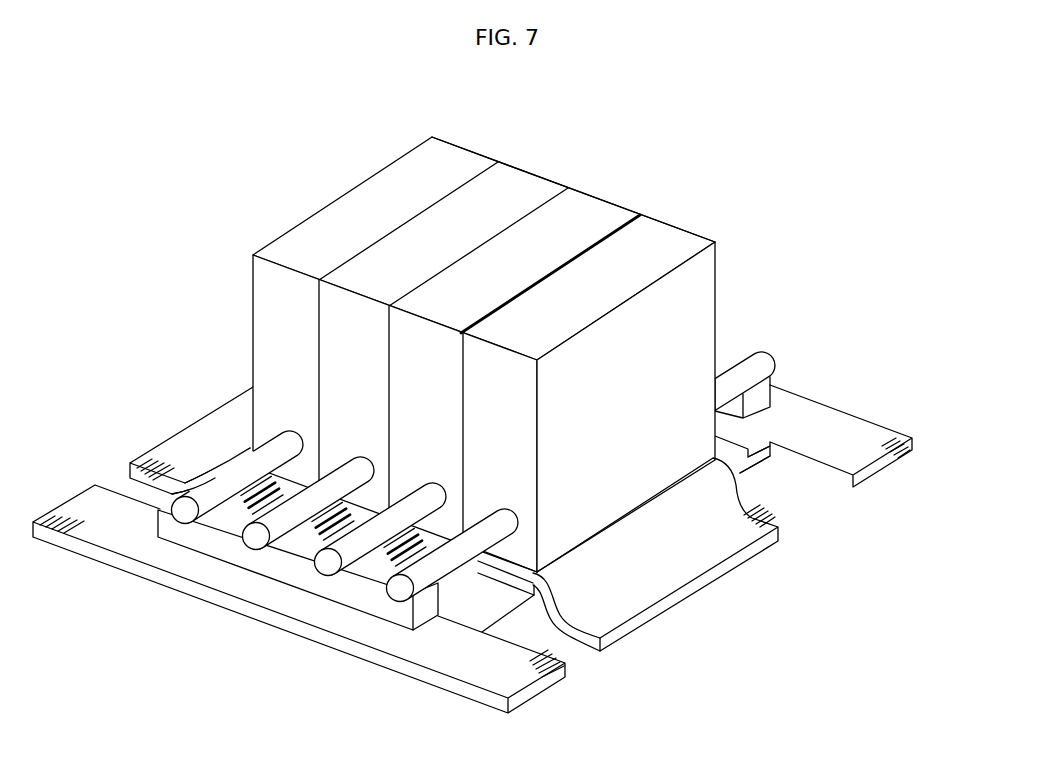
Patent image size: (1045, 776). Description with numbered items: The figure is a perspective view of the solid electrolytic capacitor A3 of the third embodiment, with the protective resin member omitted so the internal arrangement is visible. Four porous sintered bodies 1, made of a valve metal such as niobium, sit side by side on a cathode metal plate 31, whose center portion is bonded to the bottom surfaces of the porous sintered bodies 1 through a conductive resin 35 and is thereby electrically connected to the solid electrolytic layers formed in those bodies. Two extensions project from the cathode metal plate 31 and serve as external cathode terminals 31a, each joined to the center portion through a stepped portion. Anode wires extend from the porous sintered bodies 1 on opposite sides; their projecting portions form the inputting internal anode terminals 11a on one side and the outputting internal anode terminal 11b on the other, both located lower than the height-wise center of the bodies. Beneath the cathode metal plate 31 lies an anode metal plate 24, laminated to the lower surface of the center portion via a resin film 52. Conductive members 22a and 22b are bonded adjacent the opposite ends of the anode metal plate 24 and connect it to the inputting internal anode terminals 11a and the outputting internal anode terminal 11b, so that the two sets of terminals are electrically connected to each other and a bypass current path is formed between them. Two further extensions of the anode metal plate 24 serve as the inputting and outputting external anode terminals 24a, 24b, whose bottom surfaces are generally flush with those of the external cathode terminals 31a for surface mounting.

The porous sintered body 1 is at (318, 237).
The conductive resin 35 is at (378, 188).
The solid electrolytic capacitor A3 is at (720, 194).
The inputting internal anode terminal 11a is at (400, 590).
The outputting internal anode terminal 11b is at (762, 362).
The conductive member 22a is at (402, 618).
The conductive member 22b is at (758, 397).
The anode metal plate 24 is at (500, 607).
The inputting external anode terminal 24a is at (95, 500).
The outputting external anode terminal 24b is at (865, 455).
The cathode metal plate 31 is at (650, 532).
The external cathode terminal 31a is at (152, 463).
The resin film 52 is at (733, 455).